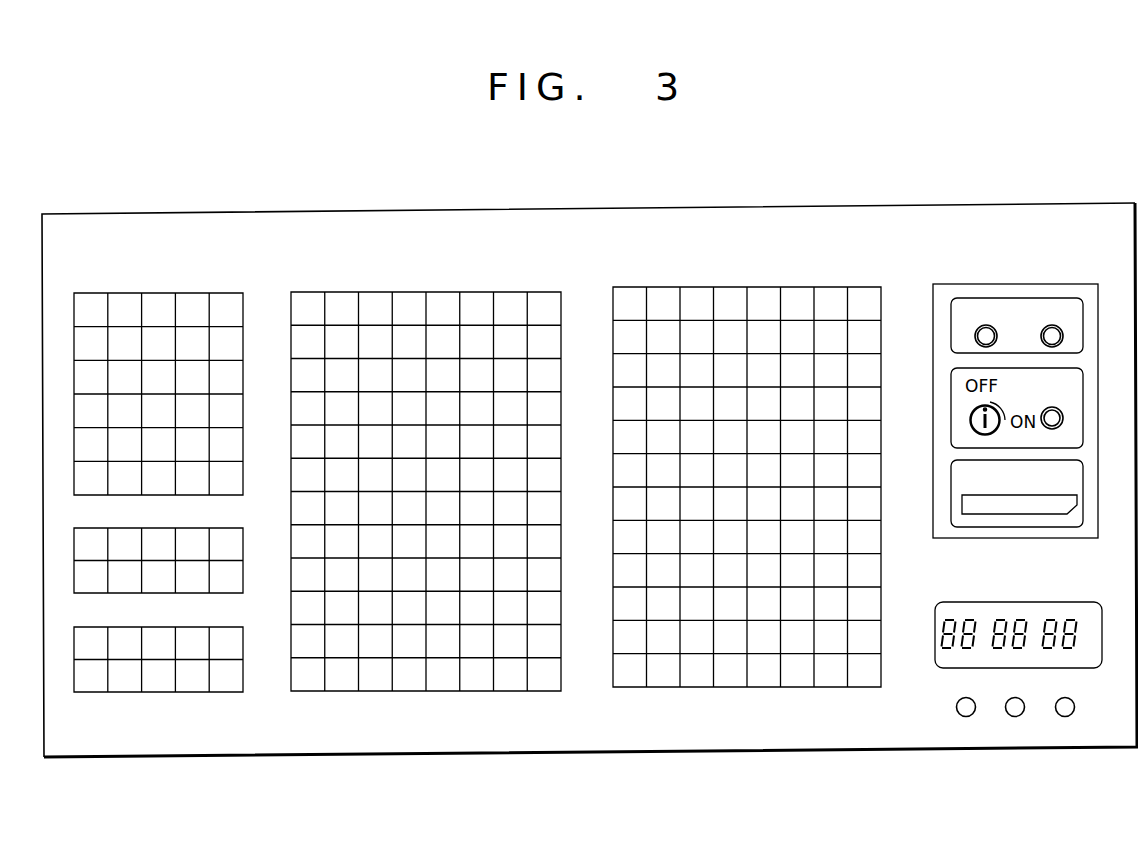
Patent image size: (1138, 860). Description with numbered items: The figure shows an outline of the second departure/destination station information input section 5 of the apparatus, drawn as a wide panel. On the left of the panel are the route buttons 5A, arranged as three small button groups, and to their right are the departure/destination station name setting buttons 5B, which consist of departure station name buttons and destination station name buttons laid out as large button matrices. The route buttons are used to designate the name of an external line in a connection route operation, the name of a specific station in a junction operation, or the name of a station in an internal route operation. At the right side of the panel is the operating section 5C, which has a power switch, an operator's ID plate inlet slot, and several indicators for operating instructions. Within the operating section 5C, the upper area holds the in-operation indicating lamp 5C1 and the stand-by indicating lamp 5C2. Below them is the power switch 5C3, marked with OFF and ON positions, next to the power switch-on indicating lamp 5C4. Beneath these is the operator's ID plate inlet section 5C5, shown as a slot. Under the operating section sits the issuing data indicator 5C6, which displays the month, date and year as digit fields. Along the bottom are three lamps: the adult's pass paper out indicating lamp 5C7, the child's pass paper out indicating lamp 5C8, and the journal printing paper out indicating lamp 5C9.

The second departure/destination station information input section 5 is at (758, 222).
The route buttons 5A is at (183, 693).
The departure/destination station name setting buttons 5B is at (417, 692).
The operating section 5C is at (1021, 292).
The in-operation indicating lamp 5C1 is at (985, 330).
The stand-by indicating lamp 5C2 is at (1050, 330).
The power switch 5C3 is at (972, 420).
The power switch-on indicating lamp 5C4 is at (1052, 409).
The operator's ID plate inlet section 5C5 is at (1047, 506).
The issuing data indicator 5C6 is at (993, 612).
The adult's pass paper out indicating lamp 5C7 is at (961, 715).
The child's pass paper out indicating lamp 5C8 is at (1010, 715).
The journal printing paper out indicating lamp 5C9 is at (1060, 715).